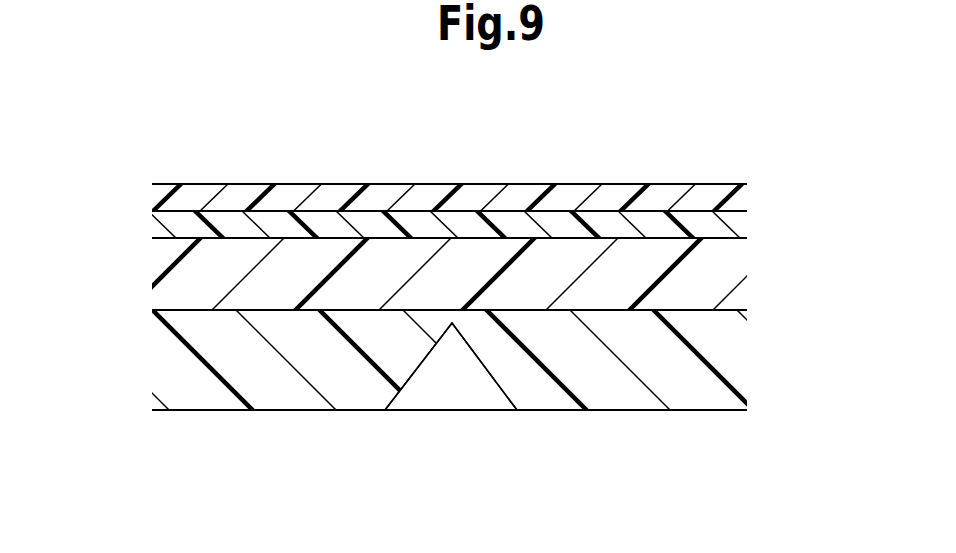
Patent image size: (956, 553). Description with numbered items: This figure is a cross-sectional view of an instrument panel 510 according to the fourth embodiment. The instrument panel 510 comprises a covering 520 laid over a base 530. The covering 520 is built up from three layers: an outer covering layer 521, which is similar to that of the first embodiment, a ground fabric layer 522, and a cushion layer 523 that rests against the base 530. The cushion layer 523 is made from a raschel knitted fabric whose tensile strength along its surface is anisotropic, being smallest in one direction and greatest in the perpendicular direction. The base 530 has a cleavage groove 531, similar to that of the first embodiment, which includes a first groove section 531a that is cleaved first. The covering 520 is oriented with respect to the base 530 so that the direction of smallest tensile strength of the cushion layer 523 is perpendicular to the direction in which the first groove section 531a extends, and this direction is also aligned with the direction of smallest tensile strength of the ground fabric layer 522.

The instrument panel 510 is at (668, 148).
The covering 520 is at (142, 310).
The covering layer 521 is at (738, 199).
The ground fabric layer 522 is at (738, 224).
The cushion layer 523 is at (740, 265).
The base 530 is at (142, 311).
The first groove section 531a is at (406, 379).
The cleavage groove 531 is at (406, 379).